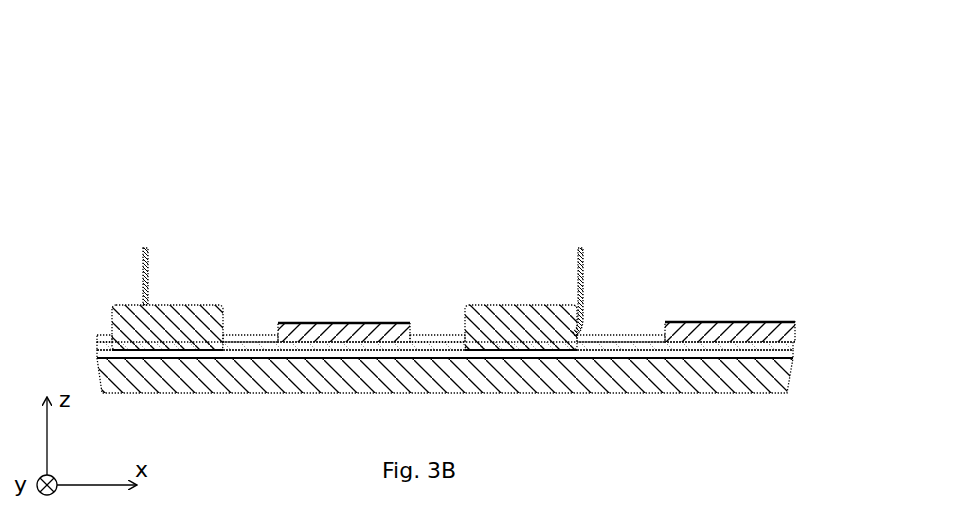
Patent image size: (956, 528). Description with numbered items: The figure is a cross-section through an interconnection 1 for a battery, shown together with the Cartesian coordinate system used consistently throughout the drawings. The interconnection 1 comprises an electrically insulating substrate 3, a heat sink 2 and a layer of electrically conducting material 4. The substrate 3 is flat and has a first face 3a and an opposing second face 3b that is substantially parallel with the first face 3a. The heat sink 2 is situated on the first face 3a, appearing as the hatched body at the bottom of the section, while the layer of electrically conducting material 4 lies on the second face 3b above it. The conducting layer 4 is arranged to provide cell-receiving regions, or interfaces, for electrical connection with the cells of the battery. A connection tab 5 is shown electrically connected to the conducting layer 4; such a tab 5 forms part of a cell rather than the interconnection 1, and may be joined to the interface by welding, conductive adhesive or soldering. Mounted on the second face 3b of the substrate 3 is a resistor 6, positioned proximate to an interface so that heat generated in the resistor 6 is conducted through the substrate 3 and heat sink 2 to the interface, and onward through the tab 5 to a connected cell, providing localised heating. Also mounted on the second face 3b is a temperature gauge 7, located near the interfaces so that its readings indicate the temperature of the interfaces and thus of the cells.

The interconnection 1 is at (565, 63).
The heat sink 2 is at (390, 375).
The electrically insulating substrate 3 is at (607, 355).
The first face 3a is at (787, 362).
The second face 3b is at (778, 350).
The layer of electrically conducting material 4 is at (262, 343).
The connection tab 5 is at (584, 262).
The resistor 6 is at (747, 332).
The temperature gauge 7 is at (503, 332).